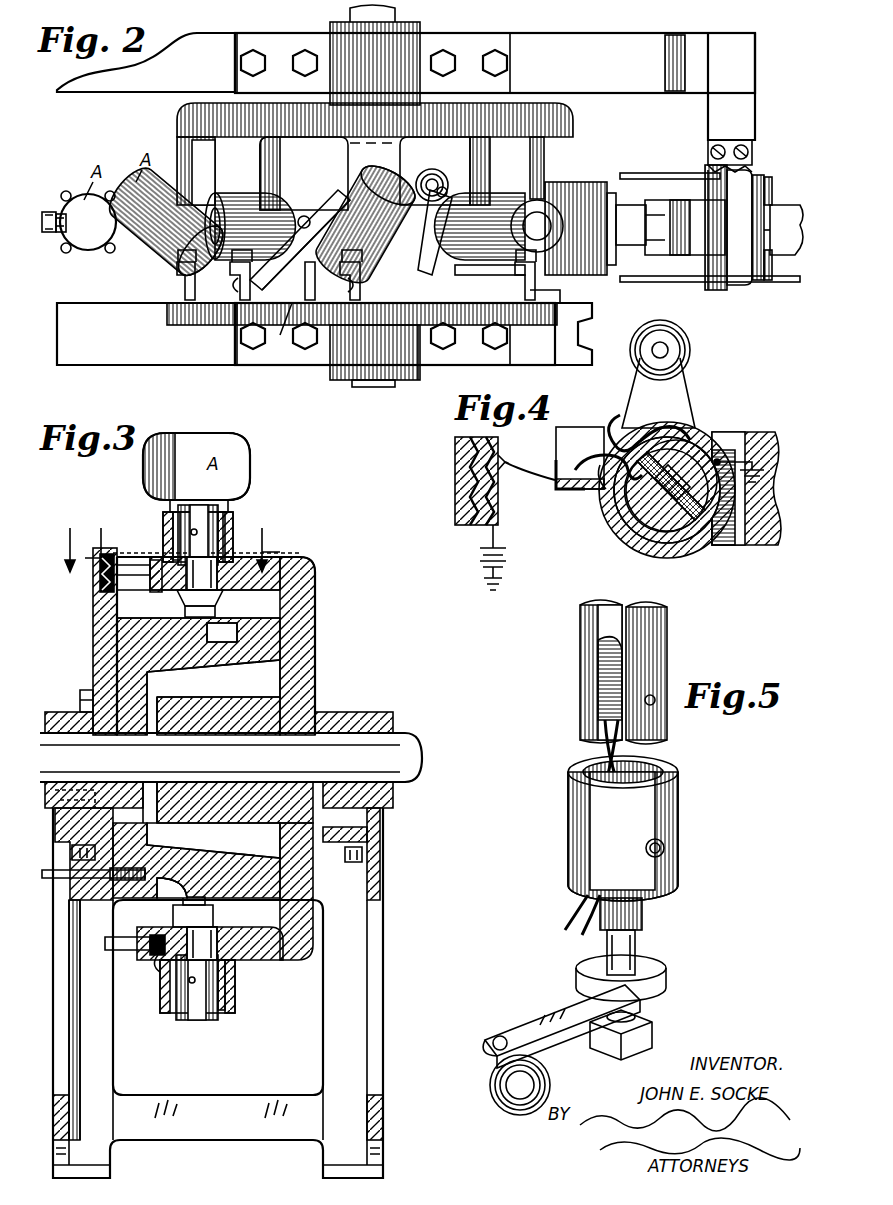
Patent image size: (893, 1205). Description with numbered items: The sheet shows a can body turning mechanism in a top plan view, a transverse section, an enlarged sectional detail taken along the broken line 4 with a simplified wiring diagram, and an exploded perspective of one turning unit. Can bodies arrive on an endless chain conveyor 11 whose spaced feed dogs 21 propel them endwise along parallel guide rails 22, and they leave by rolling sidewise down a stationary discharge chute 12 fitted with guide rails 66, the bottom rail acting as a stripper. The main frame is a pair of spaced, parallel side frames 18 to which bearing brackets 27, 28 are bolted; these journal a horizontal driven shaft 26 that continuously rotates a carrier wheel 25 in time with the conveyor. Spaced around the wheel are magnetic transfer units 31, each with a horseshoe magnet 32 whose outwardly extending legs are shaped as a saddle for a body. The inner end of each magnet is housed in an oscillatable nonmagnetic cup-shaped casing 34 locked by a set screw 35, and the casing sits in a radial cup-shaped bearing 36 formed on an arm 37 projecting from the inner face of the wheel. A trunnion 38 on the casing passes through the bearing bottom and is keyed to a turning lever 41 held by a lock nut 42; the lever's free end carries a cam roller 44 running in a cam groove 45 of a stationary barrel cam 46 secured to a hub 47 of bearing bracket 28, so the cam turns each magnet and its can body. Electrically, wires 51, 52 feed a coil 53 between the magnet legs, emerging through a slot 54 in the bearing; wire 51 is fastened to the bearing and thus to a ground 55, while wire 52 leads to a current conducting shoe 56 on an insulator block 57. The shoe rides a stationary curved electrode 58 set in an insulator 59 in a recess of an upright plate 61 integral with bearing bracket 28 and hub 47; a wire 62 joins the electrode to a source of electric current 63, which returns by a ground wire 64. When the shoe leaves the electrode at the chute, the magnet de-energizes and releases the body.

In FIG. 3, the broken line 4— 4 is at (181, 540).
In FIG. 2, the endless chain conveyor 11 is at (48, 210).
In FIG. 2, the stationary discharge chute 12 is at (770, 182).
In FIG. 2, the side frames 18 is at (160, 82).
In FIG. 3, the side frames 18 is at (383, 940).
In FIG. 2, the feed dogs 21 is at (60, 235).
In FIG. 2, the guide rails 22 is at (70, 195).
In FIG. 2, the carrier wheel 25 is at (570, 118).
In FIG. 3, the carrier wheel 25 is at (300, 580).
In FIG. 2, the driven shaft 26 is at (372, 390).
In FIG. 3, the driven shaft 26 is at (410, 742).
In FIG. 2, the bearing bracket 27 is at (420, 30).
In FIG. 3, the bearing bracket 27 is at (375, 712).
In FIG. 2, the bearing bracket 28 is at (412, 385).
In FIG. 3, the bearing bracket 28 is at (65, 712).
In FIG. 2, the magnetic transfer unit 31 is at (482, 278).
In FIG. 3, the magnetic transfer unit 31 is at (238, 508).
In FIG. 5, the magnetic transfer unit 31 is at (690, 815).
In FIG. 2, the horseshoe magnet 32 is at (553, 180).
In FIG. 4, the horseshoe magnet 32 is at (700, 470).
In FIG. 3, the horseshoe magnet 32 is at (178, 510).
In FIG. 5, the horseshoe magnet 32 is at (583, 632).
In FIG. 4, the cup-shaped casing 34 is at (650, 555).
In FIG. 3, the cup-shaped casing 34 is at (160, 530).
In FIG. 5, the cup-shaped casing 34 is at (665, 790).
In FIG. 5, the set screw 35 is at (664, 845).
In FIG. 2, the cup-shaped bearing 36 is at (260, 215).
In FIG. 4, the cup-shaped bearing 36 is at (675, 557).
In FIG. 3, the cup-shaped bearing 36 is at (228, 535).
In FIG. 2, the arm 37 is at (315, 160).
In FIG. 4, the arm 37 is at (778, 535).
In FIG. 3, the arm 37 is at (280, 565).
In FIG. 3, the trunnion 38 is at (210, 575).
In FIG. 5, the trunnion 38 is at (642, 910).
In FIG. 2, the turning lever 41 is at (322, 190).
In FIG. 4, the turning lever 41 is at (672, 385).
In FIG. 3, the turning lever 41 is at (177, 605).
In FIG. 5, the turning lever 41 is at (540, 1012).
In FIG. 3, the lock nut 42 is at (205, 612).
In FIG. 2, the cam roller 44 is at (428, 170).
In FIG. 4, the cam roller 44 is at (690, 342).
In FIG. 5, the cam roller 44 is at (492, 1098).
In FIG. 2, the cam groove 45 is at (312, 243).
In FIG. 3, the cam groove 45 is at (230, 660).
In FIG. 2, the barrel cam 46 is at (280, 331).
In FIG. 3, the barrel cam 46 is at (240, 632).
In FIG. 3, the hub 47 is at (152, 700).
In FIG. 5, the hub 47 is at (652, 1028).
In FIG. 4, the wire 51 is at (613, 422).
In FIG. 5, the wire 51 is at (565, 912).
In FIG. 4, the wire 52 is at (590, 455).
In FIG. 5, the wire 52 is at (582, 920).
In FIG. 4, the coil 53 is at (690, 545).
In FIG. 3, the coil 53 is at (175, 532).
In FIG. 5, the coil 53 is at (600, 688).
In FIG. 4, the slot 54 is at (600, 478).
In FIG. 3, the slot 54 is at (150, 950).
In FIG. 4, the ground 55 is at (752, 466).
In FIG. 2, the current conducting shoe 56 is at (176, 290).
In FIG. 4, the current conducting shoe 56 is at (525, 478).
In FIG. 3, the current conducting shoe 56 is at (135, 580).
In FIG. 2, the insulator block 57 is at (324, 281).
In FIG. 4, the insulator block 57 is at (565, 490).
In FIG. 3, the insulator block 57 is at (155, 962).
In FIG. 4, the curved electrode 58 is at (505, 462).
In FIG. 3, the curved electrode 58 is at (100, 580).
In FIG. 4, the insulator 59 is at (490, 525).
In FIG. 3, the insulator 59 is at (100, 590).
In FIG. 2, the upright plate 61 is at (552, 282).
In FIG. 4, the upright plate 61 is at (455, 520).
In FIG. 3, the upright plate 61 is at (92, 630).
In FIG. 4, the wire 62 is at (494, 535).
In FIG. 4, the source of electric current 63 is at (482, 570).
In FIG. 4, the ground wire 64 is at (500, 582).
In FIG. 2, the guide rails 66 is at (690, 205).